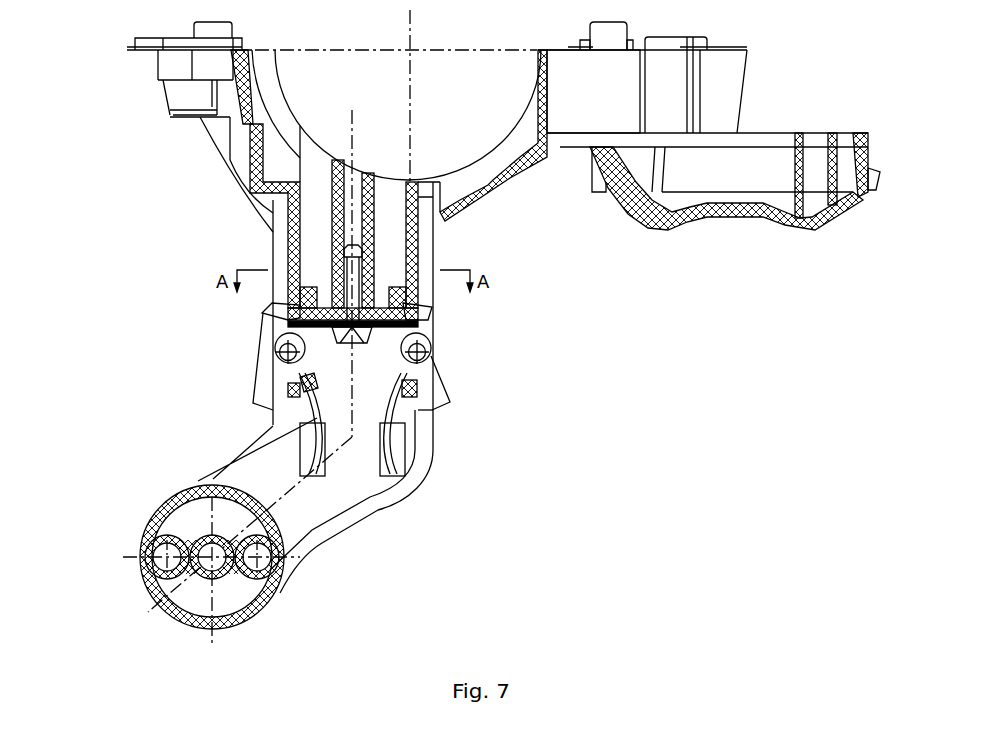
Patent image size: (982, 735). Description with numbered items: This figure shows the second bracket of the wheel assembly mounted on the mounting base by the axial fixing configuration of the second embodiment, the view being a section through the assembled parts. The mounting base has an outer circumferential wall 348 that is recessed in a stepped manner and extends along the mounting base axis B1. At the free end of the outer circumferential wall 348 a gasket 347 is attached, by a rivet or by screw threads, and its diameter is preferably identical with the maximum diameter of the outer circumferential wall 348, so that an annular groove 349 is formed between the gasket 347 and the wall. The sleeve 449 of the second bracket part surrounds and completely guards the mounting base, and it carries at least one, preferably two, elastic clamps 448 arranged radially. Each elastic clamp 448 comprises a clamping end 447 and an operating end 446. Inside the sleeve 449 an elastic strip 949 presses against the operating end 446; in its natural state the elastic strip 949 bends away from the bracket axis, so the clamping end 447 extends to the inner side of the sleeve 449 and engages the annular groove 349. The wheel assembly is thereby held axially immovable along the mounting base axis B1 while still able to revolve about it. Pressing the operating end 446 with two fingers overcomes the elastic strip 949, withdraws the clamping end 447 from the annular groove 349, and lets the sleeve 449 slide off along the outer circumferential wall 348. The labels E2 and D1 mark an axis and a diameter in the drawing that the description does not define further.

The outer circumferential wall 348 is at (293, 230).
The sleeve 449 is at (272, 248).
The clamping end 447 is at (262, 325).
The operating end 446 is at (283, 388).
The elastic strip 949 is at (316, 419).
The annular groove 349 is at (420, 313).
The gasket 347 is at (420, 323).
The elastic clamp 448 is at (448, 375).
The cable axis E2 is at (300, 487).
The cable cross-section D1 is at (250, 577).
The mounting base axis B1 is at (353, 257).